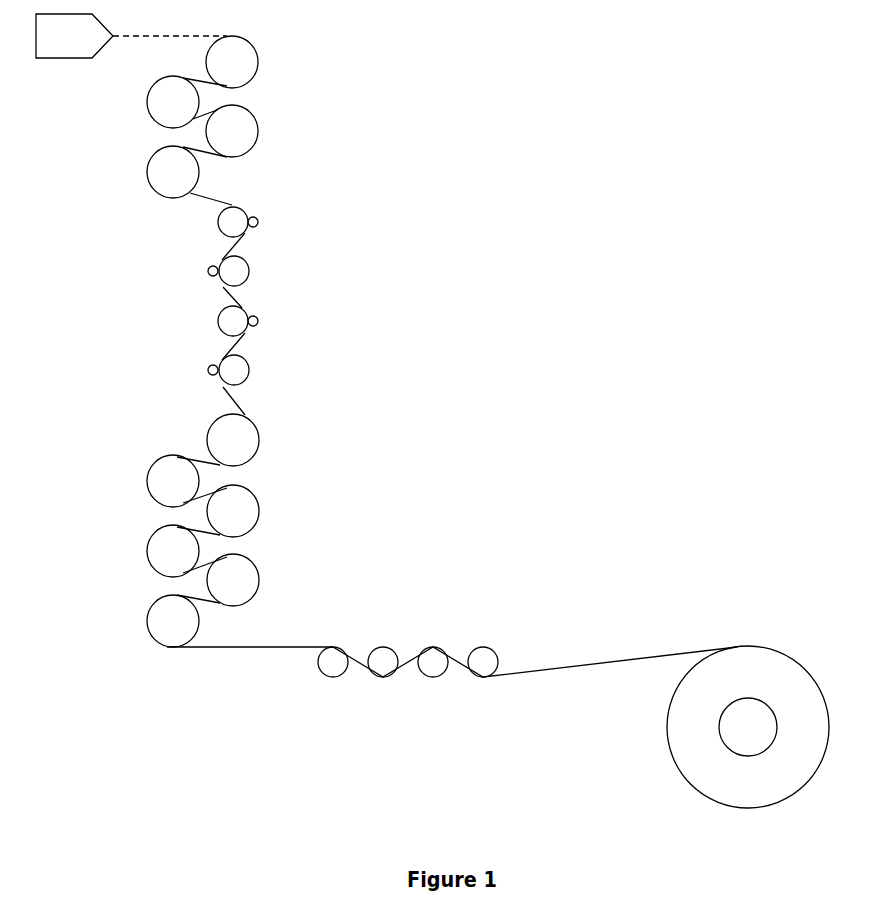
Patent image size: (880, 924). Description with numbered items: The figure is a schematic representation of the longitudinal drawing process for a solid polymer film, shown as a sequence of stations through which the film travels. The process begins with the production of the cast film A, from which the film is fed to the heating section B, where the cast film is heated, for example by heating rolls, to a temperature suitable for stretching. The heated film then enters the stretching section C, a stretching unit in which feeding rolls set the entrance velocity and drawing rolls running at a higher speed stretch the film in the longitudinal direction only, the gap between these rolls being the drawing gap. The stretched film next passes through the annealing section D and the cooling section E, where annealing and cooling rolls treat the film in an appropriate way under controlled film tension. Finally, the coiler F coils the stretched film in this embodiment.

The production of the cast film A is at (74, 60).
The heating section B is at (230, 117).
The stretching section C is at (260, 296).
The annealing section D is at (231, 530).
The cooling section E is at (408, 631).
The coiler F is at (748, 696).